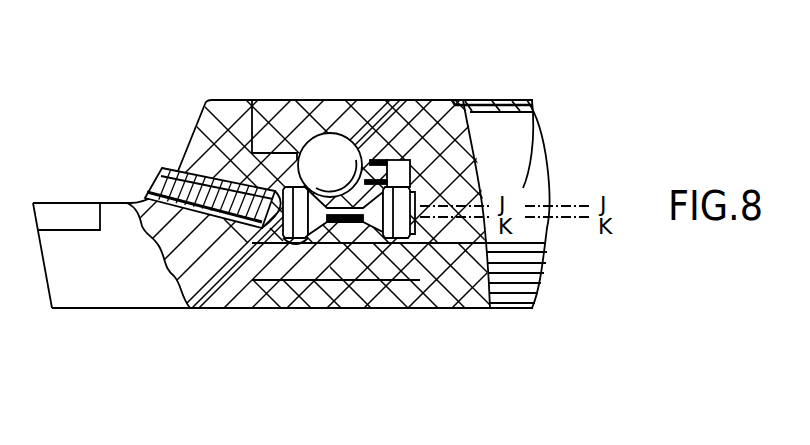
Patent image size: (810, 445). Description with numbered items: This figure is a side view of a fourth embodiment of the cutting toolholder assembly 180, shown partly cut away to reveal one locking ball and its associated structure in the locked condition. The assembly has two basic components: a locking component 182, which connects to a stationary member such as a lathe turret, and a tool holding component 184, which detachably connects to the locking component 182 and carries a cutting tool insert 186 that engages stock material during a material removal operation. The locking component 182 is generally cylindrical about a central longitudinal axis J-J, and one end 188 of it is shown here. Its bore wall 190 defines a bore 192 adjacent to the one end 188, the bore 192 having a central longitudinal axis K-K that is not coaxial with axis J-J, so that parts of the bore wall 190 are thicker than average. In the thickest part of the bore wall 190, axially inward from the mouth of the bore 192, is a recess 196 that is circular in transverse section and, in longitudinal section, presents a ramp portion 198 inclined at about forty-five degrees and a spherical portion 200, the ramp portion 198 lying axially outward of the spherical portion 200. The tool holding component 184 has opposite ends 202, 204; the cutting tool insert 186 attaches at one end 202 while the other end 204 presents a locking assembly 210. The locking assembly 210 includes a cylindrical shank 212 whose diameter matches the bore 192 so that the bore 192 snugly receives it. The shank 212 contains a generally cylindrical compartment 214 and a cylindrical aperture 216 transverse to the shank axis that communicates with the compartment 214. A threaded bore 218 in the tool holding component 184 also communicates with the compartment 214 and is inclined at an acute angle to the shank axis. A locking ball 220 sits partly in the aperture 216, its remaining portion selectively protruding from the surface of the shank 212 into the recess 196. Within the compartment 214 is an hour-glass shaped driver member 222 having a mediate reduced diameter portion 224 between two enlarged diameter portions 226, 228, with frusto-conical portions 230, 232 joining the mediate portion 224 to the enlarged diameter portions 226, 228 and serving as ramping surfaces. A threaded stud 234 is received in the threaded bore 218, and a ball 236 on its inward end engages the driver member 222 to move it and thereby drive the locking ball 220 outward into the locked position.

The cutting toolholder assembly 180 is at (162, 48).
The locking component 182 is at (540, 262).
The tool holding component 184 is at (142, 298).
The cutting tool insert 186 is at (49, 203).
The one end 188 is at (250, 281).
The bore wall 190 is at (381, 308).
The bore 192 is at (440, 190).
The recess 196 is at (362, 150).
The ramp portion 198 is at (315, 138).
The spherical portion 200 is at (412, 217).
The one end 202 is at (43, 287).
The other end 204 is at (398, 243).
The locking assembly 210 is at (97, 114).
The cylindrical shank 212 is at (343, 282).
The compartment 214 is at (417, 308).
The cylindrical aperture 216 is at (297, 150).
The threaded bore 218 is at (156, 188).
The locking ball 220 is at (330, 134).
The driver member 222 is at (513, 310).
The mediate reduced diameter portion 224 is at (468, 102).
The enlarged diameter portion 226 is at (237, 180).
The enlarged diameter portion 228 is at (413, 232).
The frusto-conical portion 230 is at (317, 280).
The frusto-conical portion 232 is at (500, 100).
The threaded stud 234 is at (174, 167).
The ball 236 is at (190, 308).